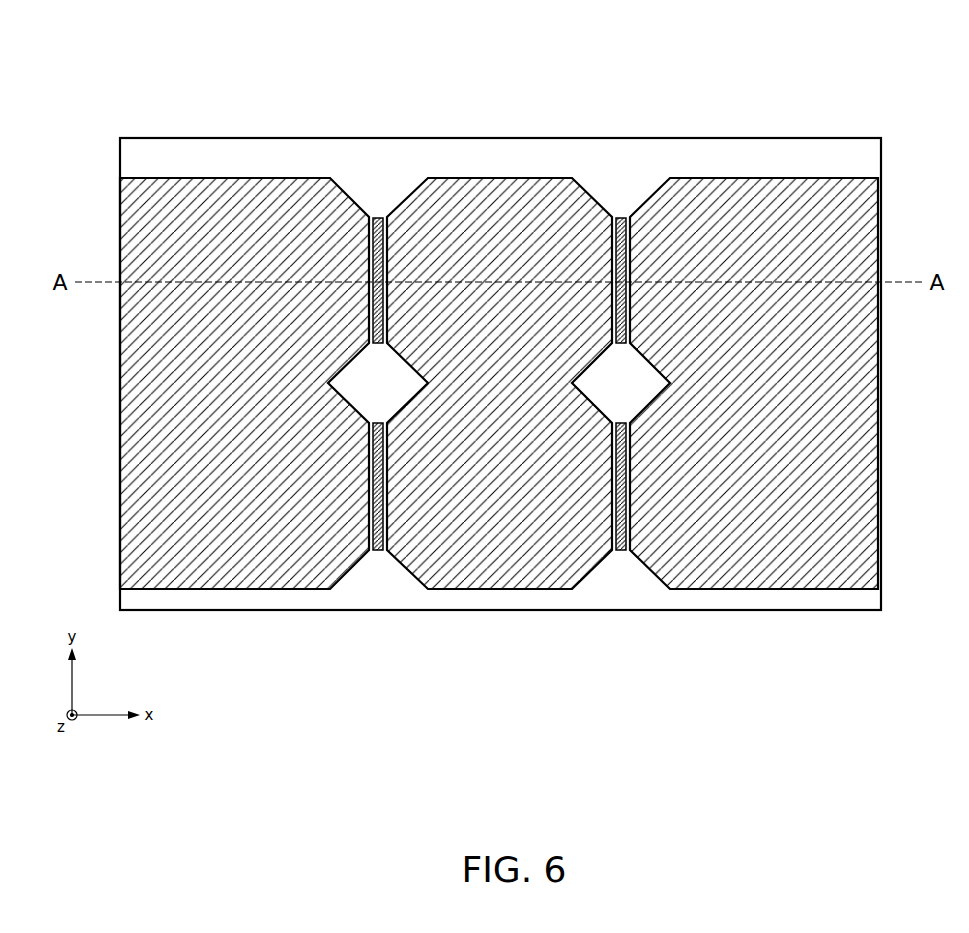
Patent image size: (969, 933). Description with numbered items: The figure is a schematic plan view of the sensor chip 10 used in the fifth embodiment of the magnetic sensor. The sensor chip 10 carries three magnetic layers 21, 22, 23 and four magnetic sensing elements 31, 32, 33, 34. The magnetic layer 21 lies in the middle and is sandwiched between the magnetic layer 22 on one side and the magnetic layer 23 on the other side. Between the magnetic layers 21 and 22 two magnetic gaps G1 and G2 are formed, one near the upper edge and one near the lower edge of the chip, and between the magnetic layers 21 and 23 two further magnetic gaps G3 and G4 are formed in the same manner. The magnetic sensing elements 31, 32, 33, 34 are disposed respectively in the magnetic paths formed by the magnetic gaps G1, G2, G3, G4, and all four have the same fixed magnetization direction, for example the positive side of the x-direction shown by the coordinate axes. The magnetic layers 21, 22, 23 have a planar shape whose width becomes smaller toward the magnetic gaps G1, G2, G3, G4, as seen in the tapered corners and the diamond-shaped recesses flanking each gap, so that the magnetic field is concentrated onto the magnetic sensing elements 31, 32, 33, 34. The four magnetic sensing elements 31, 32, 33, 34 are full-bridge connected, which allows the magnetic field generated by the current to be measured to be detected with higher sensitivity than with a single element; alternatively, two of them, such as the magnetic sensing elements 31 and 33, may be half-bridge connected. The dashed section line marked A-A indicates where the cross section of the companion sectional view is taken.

The sensor chip 10 is at (868, 31).
The magnetic layer 21 is at (500, 228).
The magnetic layer 22 is at (214, 228).
The magnetic layer 23 is at (793, 228).
The magnetic sensing element 31 is at (375, 255).
The magnetic sensing element 32 is at (375, 480).
The magnetic sensing element 33 is at (627, 252).
The magnetic sensing element 34 is at (627, 478).
The magnetic gap G1 is at (377, 210).
The magnetic gap G2 is at (380, 560).
The magnetic gap G3 is at (620, 210).
The magnetic gap G4 is at (623, 560).